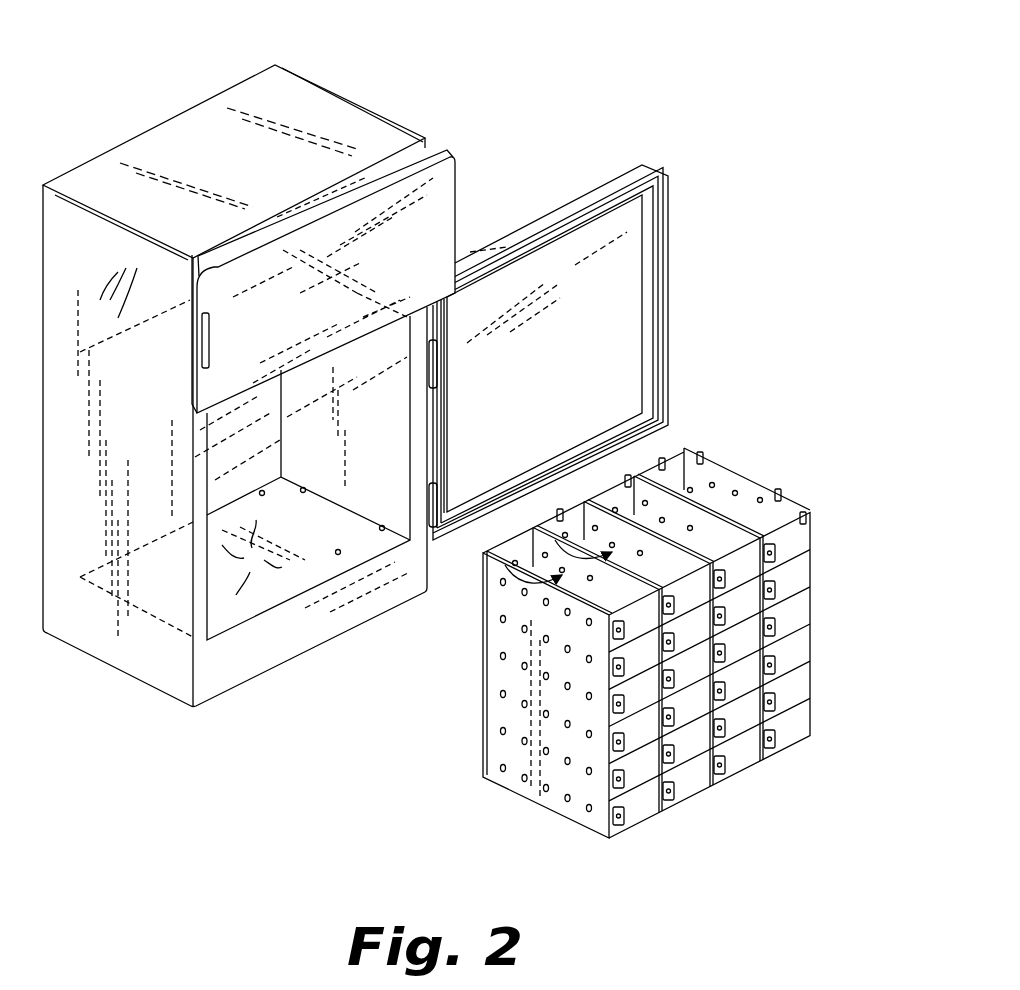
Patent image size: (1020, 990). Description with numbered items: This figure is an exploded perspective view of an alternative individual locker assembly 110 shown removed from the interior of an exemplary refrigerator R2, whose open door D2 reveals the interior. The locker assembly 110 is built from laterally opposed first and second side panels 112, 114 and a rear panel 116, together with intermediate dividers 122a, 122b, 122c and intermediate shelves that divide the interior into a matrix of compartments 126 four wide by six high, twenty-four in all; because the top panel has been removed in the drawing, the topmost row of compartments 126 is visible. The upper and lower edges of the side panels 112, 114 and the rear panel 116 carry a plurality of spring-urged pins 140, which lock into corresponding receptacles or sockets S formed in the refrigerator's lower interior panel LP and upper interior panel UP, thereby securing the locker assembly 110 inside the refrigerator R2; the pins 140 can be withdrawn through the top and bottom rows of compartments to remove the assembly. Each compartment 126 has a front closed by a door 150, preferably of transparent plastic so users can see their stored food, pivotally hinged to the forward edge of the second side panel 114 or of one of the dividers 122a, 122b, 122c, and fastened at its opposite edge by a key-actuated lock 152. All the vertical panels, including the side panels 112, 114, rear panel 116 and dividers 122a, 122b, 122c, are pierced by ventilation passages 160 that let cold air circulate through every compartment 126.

The refrigerator R2 is at (180, 113).
The refrigerator door D2 is at (643, 162).
The locker engagement assembly receptacles or sockets S is at (191, 419).
The upper interior panel UP is at (141, 393).
The lower interior panel LP is at (333, 532).
The individual locker assembly 110 is at (364, 814).
The first side panel 112 is at (495, 746).
The second side panel 114 is at (733, 483).
The rear panel 116 is at (612, 498).
The intermediate divider 122a is at (545, 495).
The intermediate divider 122b is at (582, 495).
The intermediate divider 122c is at (704, 530).
The compartments 126 is at (761, 505).
The pins 140 is at (699, 458).
The door 150 is at (737, 770).
The lock 152 is at (625, 822).
The ventilation passages 160 is at (662, 458).